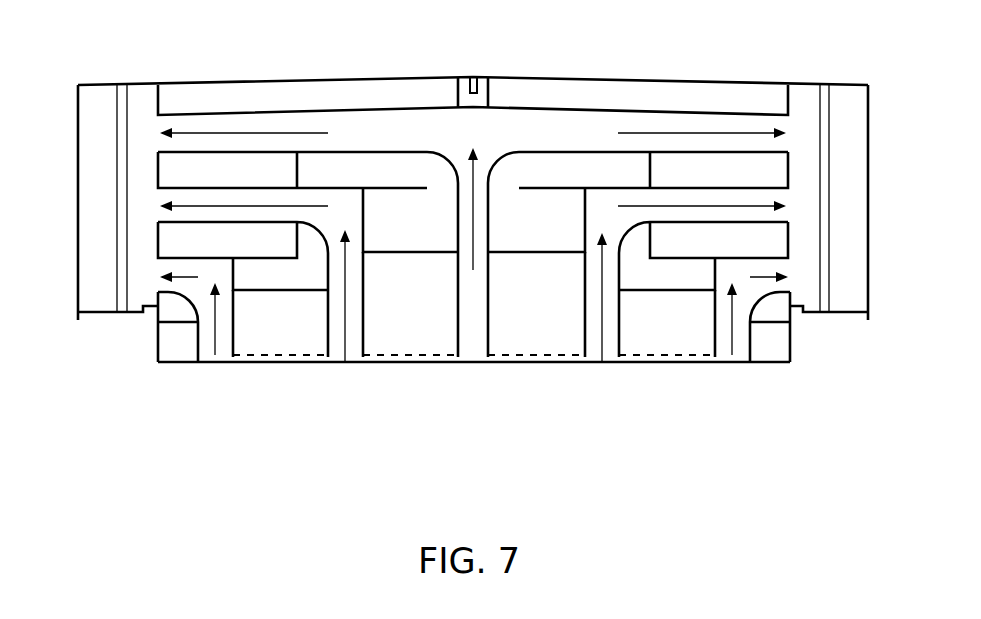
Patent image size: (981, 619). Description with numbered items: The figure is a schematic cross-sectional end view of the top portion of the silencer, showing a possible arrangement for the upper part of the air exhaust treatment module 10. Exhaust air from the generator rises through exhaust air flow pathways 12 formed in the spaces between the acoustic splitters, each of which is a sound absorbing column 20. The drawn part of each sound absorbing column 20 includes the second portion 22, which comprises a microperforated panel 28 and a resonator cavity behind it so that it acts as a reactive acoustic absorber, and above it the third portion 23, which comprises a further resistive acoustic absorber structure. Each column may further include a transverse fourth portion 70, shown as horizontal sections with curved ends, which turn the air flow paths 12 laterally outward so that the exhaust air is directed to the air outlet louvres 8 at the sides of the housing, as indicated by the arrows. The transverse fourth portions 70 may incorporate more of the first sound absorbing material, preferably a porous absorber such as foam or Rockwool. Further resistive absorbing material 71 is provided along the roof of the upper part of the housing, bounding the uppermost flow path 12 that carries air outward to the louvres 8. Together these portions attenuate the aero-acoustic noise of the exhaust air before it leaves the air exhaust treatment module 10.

The air outlet louvres 8 is at (88, 150).
The air exhaust treatment module 10 is at (133, 337).
The exhaust air flow pathways 12 is at (487, 172).
The sound absorbing column 20 is at (233, 348).
The second portion 22 is at (298, 347).
The third portion 23 is at (474, 239).
The microperforated panel 28 is at (270, 357).
The transverse fourth portion 70 is at (473, 254).
The resistive absorbing material 71 is at (405, 92).